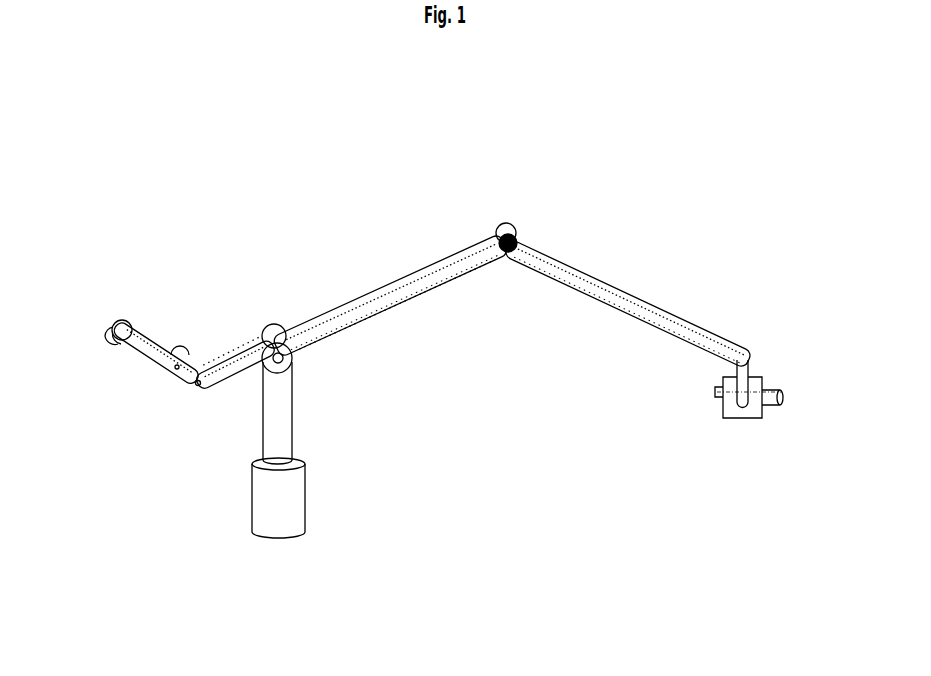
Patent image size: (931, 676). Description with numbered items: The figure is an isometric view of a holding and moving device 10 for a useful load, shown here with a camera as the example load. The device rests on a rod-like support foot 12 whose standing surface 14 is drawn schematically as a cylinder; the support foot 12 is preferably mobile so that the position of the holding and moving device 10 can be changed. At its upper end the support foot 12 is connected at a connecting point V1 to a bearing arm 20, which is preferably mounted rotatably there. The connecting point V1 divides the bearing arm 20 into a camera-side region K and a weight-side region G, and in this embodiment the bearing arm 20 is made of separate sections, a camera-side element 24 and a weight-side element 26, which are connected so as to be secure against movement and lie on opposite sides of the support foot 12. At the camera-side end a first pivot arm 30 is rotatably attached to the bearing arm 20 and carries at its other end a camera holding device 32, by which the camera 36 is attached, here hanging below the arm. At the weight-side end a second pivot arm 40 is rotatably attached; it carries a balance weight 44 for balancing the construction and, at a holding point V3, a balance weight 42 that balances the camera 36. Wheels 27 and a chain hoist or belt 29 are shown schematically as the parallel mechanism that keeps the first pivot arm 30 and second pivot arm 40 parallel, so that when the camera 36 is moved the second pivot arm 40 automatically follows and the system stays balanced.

The holding and moving device 10 is at (341, 156).
The support foot 12 is at (290, 430).
The standing surface 14 is at (306, 480).
The bearing arm 20 is at (295, 267).
The camera-side element of the bearing arm 24 is at (383, 309).
The weight-side element of the bearing arm 26 is at (242, 389).
The wheels 27 is at (515, 231).
The chain hoist/belt 29 is at (341, 336).
The first pivot arm 30 is at (627, 298).
The camera holding device 32 is at (751, 374).
The camera 36 is at (723, 407).
The second pivot arm 40 is at (160, 372).
The balance weight 42 is at (113, 320).
The balance weight 44 is at (181, 342).
The camera-side region K is at (650, 187).
The weight-side region G is at (185, 463).
The connecting point V1 is at (292, 354).
The holding point V3 is at (125, 348).